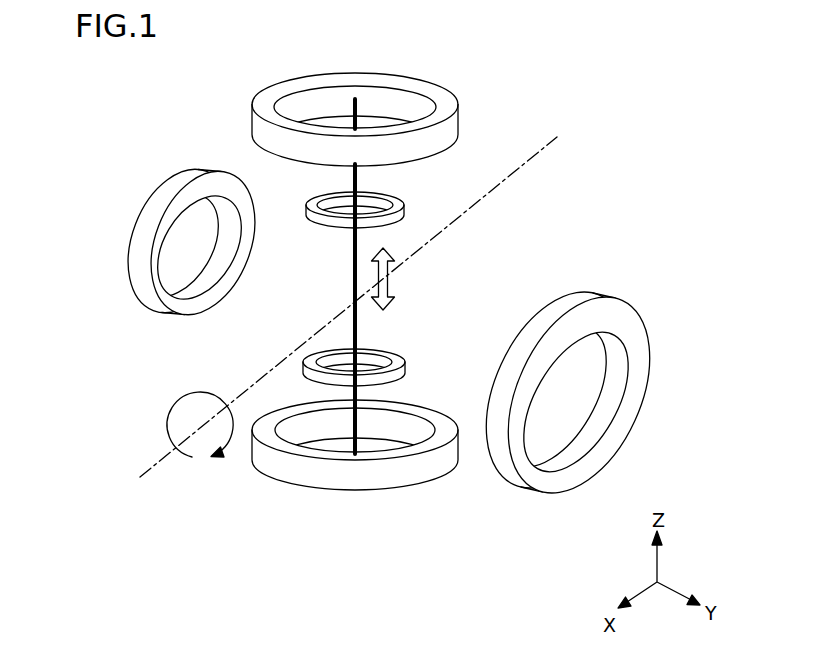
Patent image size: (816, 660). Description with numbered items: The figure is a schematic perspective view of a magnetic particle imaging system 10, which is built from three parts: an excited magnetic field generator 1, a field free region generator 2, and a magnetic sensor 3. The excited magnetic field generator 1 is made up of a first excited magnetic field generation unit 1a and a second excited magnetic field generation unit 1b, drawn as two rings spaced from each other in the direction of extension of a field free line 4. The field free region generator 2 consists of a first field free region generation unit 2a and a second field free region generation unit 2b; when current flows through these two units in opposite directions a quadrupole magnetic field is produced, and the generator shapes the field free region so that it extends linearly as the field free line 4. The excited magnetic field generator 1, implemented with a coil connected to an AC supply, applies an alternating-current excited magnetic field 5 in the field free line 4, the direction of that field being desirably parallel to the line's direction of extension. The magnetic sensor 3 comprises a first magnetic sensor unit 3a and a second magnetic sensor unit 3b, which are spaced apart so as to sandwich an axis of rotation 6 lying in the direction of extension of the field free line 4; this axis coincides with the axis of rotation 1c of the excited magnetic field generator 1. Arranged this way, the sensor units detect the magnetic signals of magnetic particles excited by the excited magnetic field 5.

The magnetic particle imaging system 10 is at (553, 92).
The excited magnetic field generator 1 is at (364, 281).
The first excited magnetic field generation unit 1a is at (437, 417).
The second excited magnetic field generation unit 1b is at (440, 153).
The axis of rotation of excited magnetic field generator 1c is at (557, 138).
The field free region generator 2 is at (389, 364).
The first field free region generation unit 2a is at (152, 306).
The second field free region generation unit 2b is at (567, 492).
The magnetic sensor 3 is at (406, 289).
The first magnetic sensor unit 3a is at (397, 352).
The second magnetic sensor unit 3b is at (403, 212).
The field free line 4 is at (353, 262).
The excited magnetic field 5 is at (397, 283).
The axis of rotation in the direction of extension of field free line 6 is at (168, 457).